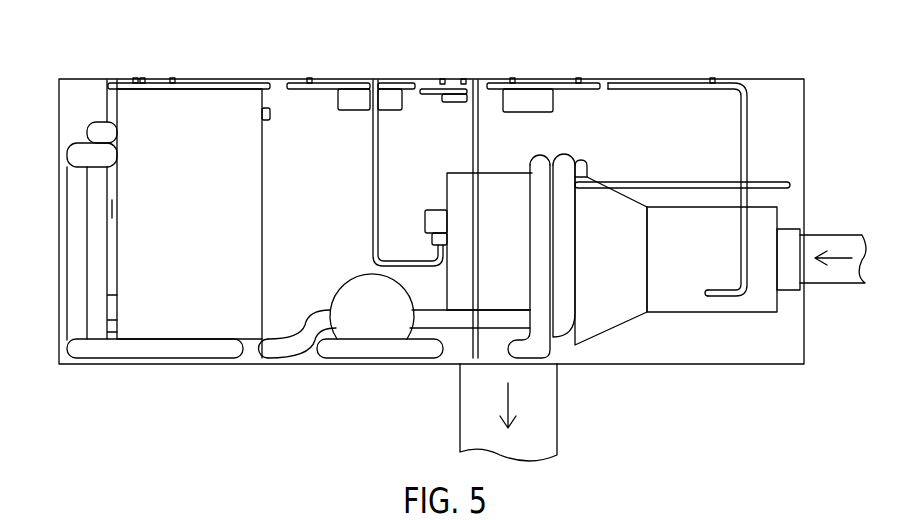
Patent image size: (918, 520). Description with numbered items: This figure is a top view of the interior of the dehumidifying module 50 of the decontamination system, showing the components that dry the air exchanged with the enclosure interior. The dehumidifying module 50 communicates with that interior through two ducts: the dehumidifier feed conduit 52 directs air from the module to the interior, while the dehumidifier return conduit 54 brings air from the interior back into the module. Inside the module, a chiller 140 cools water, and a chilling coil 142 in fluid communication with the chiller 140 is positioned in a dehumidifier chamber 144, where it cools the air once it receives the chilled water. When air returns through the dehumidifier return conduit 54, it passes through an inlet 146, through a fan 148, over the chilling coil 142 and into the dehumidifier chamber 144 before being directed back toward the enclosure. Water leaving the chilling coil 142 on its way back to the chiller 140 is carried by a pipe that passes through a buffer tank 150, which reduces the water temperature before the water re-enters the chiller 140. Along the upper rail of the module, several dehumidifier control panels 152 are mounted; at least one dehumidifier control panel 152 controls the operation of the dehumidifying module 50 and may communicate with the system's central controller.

The dehumidifying module 50 is at (751, 45).
The dehumidifier feed conduit 52 is at (557, 401).
The dehumidifier return conduit 54 is at (830, 233).
The chiller 140 is at (202, 103).
The chilling coil 142 is at (615, 161).
The dehumidifier chamber 144 is at (626, 268).
The inlet 146 is at (806, 291).
The fan 148 is at (677, 313).
The buffer tank 150 is at (346, 282).
The dehumidifier control panel 152 is at (368, 80).